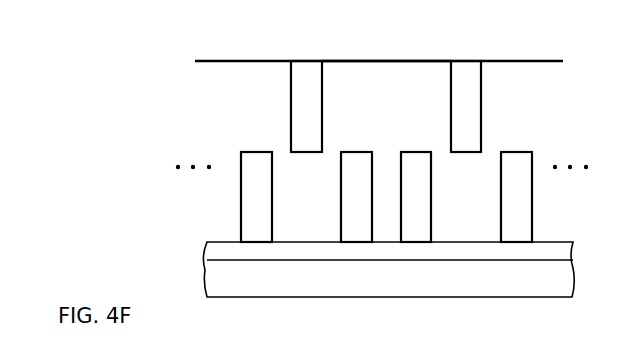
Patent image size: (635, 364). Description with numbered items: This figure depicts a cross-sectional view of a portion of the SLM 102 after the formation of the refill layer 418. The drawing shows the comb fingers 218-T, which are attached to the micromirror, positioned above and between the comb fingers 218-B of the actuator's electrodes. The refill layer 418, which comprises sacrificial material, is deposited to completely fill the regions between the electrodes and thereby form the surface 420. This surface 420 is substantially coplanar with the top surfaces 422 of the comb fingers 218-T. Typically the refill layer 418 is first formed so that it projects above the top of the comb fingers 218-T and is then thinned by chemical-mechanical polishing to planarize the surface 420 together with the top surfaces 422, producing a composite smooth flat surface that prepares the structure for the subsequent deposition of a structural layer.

The SLM 102 is at (330, 154).
The surface 420 is at (255, 55).
The top surfaces 422 is at (464, 55).
The refill layer 418 is at (265, 126).
The comb finger 218-T is at (465, 78).
The comb fingers 218-B is at (357, 173).